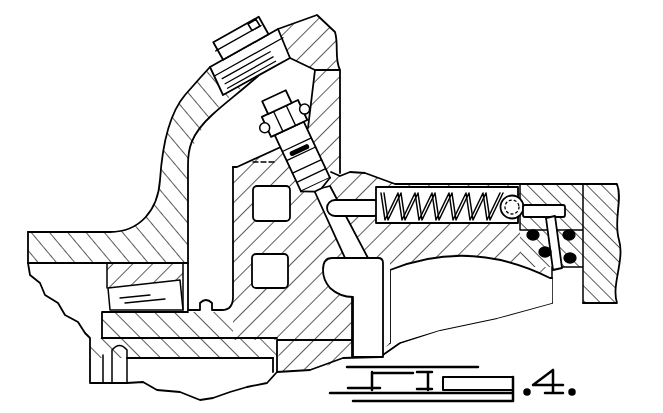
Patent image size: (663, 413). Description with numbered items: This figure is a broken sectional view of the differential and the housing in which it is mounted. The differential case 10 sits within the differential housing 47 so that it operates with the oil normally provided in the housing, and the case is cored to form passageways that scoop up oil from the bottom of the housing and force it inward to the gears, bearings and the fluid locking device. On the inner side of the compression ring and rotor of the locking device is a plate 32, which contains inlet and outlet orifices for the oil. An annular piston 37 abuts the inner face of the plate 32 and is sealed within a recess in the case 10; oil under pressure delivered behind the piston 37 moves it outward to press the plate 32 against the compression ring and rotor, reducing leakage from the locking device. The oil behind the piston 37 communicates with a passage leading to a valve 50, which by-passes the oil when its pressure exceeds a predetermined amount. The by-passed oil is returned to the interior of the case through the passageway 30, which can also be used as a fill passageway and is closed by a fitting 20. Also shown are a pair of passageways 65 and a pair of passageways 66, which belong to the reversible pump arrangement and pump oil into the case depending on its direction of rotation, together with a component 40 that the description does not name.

The case 10 is at (234, 176).
The fitting 20 is at (300, 152).
The passageway 30 is at (345, 178).
The plate 32 is at (597, 282).
The annular piston 37 is at (583, 187).
The bar 40 is at (530, 206).
The differential housing 47 is at (160, 150).
The valve 50 is at (512, 196).
The passageways 65 is at (253, 203).
The passageways 66 is at (252, 263).